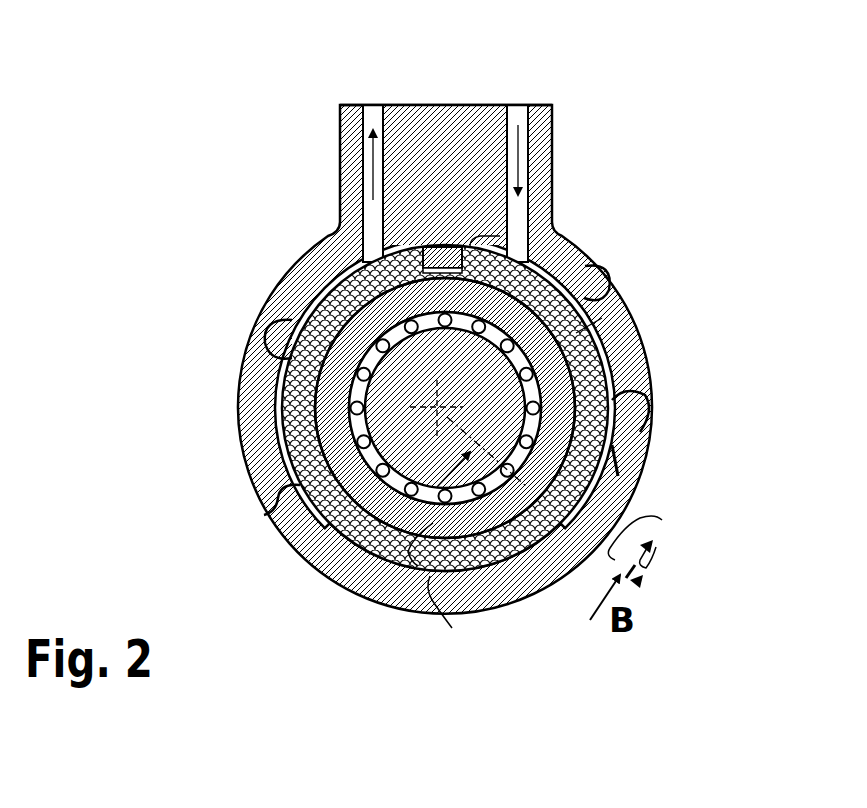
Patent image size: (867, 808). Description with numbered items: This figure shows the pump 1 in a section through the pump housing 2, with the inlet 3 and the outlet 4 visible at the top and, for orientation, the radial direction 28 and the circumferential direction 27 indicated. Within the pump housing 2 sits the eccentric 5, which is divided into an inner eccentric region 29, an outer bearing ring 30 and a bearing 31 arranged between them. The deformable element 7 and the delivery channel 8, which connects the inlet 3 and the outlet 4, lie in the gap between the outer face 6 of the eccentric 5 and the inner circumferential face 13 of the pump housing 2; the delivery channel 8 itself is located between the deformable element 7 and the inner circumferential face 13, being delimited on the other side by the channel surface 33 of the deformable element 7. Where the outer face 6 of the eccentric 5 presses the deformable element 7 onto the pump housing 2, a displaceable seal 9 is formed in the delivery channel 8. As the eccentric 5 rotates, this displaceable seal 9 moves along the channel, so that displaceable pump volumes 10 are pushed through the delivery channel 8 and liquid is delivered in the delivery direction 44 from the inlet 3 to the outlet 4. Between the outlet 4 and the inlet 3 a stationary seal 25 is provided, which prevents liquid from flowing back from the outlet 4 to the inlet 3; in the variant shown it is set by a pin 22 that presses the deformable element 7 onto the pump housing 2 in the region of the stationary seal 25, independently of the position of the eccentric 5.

The pump 1 is at (268, 205).
The pump housing 2 is at (512, 582).
The inlet 3 is at (517, 104).
The outlet 4 is at (373, 104).
The eccentric 5 is at (383, 604).
The outer face of the eccentric 6 is at (603, 318).
The deformable element 7 is at (272, 522).
The delivery channel 8 is at (648, 398).
The displaceable seal 9 is at (452, 630).
The displaceable pump volume 10 is at (604, 441).
The inner circumferential face of the pump housing 13 is at (287, 338).
The pin 22 is at (470, 246).
The stationary seal 25 is at (440, 246).
The circumferential direction 27 is at (657, 566).
The radial direction 28 is at (662, 520).
The eccentric region 29 is at (550, 340).
The bearing ring 30 is at (533, 394).
The bearing 31 is at (500, 394).
The channel surface 33 is at (283, 396).
The delivery direction 44 is at (366, 137).